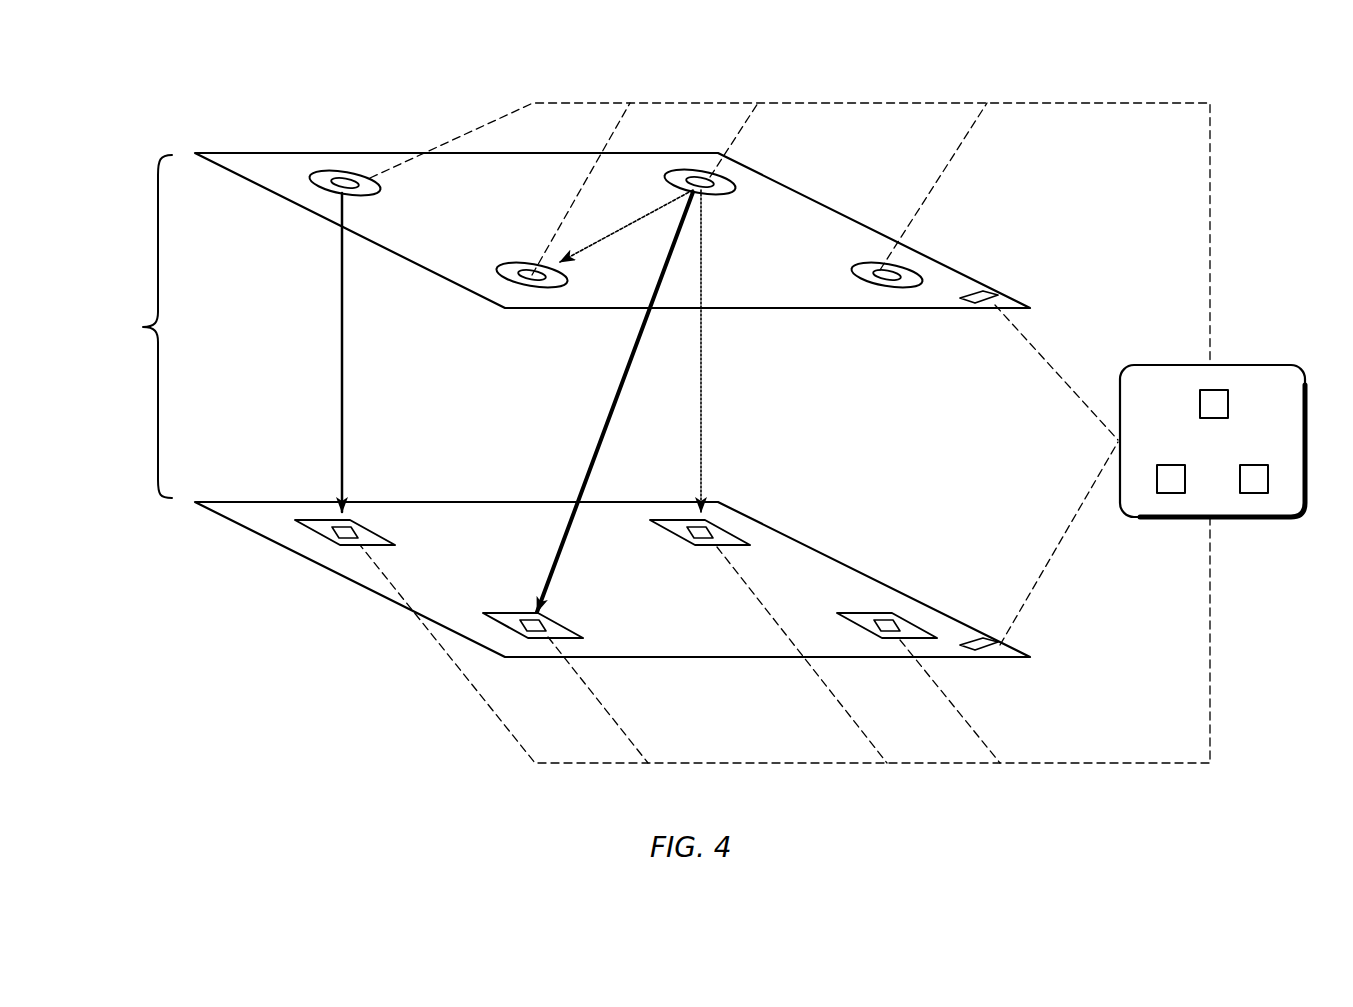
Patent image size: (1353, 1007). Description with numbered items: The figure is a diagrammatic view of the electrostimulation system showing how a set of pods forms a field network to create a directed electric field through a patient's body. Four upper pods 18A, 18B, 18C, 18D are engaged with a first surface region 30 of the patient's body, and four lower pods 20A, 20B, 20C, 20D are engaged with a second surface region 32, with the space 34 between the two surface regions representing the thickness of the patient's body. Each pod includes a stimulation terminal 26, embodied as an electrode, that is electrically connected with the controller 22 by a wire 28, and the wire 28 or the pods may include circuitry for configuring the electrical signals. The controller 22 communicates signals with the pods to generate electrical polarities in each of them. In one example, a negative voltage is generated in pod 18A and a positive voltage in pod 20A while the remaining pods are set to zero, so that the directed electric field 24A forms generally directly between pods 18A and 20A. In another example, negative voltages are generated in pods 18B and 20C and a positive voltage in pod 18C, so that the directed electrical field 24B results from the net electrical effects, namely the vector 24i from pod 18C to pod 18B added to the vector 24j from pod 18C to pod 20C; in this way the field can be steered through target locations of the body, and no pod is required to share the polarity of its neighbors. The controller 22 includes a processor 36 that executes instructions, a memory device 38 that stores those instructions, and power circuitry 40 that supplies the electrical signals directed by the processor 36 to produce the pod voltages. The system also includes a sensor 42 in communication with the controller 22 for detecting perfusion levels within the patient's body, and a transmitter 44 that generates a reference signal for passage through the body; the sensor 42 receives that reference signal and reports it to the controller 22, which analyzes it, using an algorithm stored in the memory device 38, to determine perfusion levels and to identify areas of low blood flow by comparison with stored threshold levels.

The pod 18A is at (330, 175).
The pod 18B is at (517, 263).
The pod 18C is at (745, 185).
The pod 18D is at (865, 268).
The pod 20A is at (318, 535).
The pod 20B is at (580, 623).
The pod 20C is at (680, 520).
The pod 20D is at (915, 612).
The controller 22 is at (1218, 416).
The directed electric field 24A is at (335, 332).
The directed electrical field 24B is at (592, 415).
The vector 24i is at (628, 222).
The vector 24j is at (707, 270).
The stimulation terminal 26 is at (497, 272).
The wire 28 is at (460, 135).
The first surface region 30 is at (247, 150).
The second surface region 32 is at (222, 523).
The space 34 is at (137, 326).
The processor 36 is at (1150, 480).
The memory device 38 is at (1270, 477).
The power circuitry 40 is at (1205, 388).
The sensor 42 is at (998, 296).
The transmitter 44 is at (1000, 640).